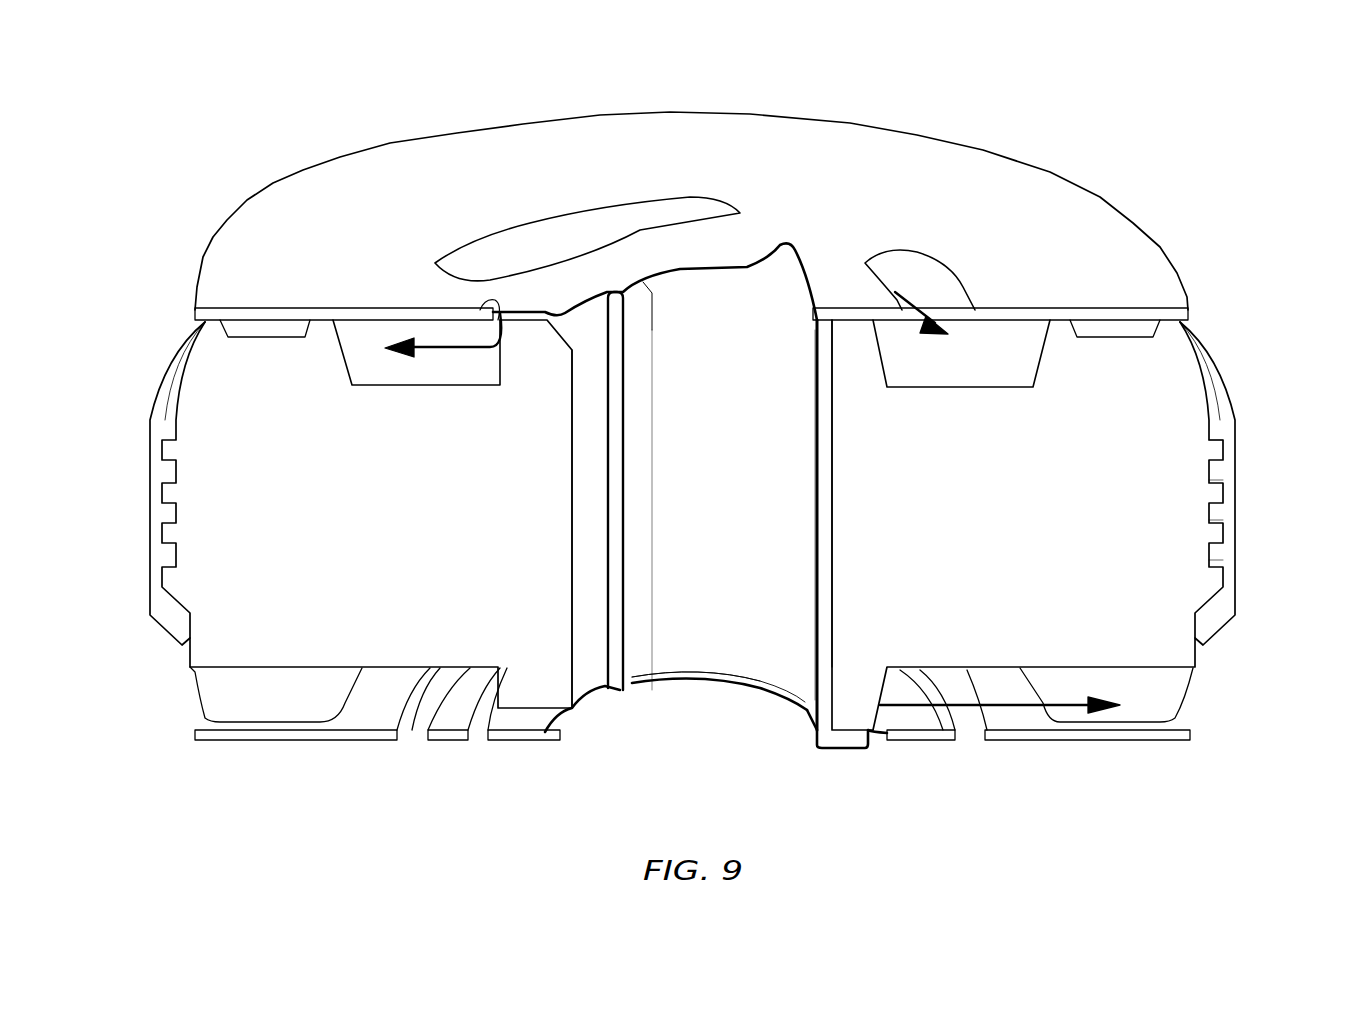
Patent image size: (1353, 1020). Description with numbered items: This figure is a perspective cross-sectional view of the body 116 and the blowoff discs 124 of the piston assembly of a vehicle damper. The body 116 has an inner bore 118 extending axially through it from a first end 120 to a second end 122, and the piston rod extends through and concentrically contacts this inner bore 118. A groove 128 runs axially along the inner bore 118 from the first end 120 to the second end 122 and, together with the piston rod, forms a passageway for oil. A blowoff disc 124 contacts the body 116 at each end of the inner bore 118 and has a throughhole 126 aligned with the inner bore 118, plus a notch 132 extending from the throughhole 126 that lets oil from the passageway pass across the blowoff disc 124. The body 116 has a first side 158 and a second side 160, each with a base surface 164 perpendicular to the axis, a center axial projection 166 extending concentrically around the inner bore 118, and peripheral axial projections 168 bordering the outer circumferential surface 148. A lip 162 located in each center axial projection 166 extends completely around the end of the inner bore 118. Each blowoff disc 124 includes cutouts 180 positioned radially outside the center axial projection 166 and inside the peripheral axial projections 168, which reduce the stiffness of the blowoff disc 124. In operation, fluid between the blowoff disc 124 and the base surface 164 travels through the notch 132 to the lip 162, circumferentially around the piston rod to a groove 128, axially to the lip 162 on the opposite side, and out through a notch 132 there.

The body 116 is at (1150, 490).
The inner bore 118 is at (722, 612).
The first end 120 is at (722, 295).
The second end 122 is at (785, 690).
The blowoff disc 124 is at (1100, 222).
The throughhole 126 is at (690, 265).
The groove 128 is at (810, 472).
The notch 132 is at (492, 304).
The outer circumferential surface 148 is at (1240, 550).
The first side 158 is at (372, 338).
The second side 160 is at (373, 697).
The lip 162 is at (592, 290).
The base surface 164 is at (925, 386).
The center axial projection 166 is at (500, 362).
The peripheral axial projections 168 is at (195, 350).
The cutout 180 is at (510, 225).